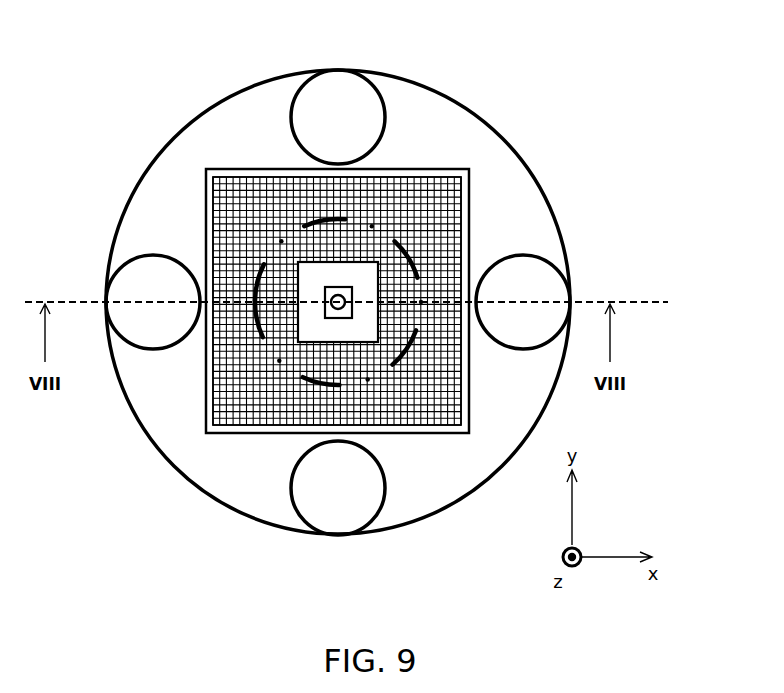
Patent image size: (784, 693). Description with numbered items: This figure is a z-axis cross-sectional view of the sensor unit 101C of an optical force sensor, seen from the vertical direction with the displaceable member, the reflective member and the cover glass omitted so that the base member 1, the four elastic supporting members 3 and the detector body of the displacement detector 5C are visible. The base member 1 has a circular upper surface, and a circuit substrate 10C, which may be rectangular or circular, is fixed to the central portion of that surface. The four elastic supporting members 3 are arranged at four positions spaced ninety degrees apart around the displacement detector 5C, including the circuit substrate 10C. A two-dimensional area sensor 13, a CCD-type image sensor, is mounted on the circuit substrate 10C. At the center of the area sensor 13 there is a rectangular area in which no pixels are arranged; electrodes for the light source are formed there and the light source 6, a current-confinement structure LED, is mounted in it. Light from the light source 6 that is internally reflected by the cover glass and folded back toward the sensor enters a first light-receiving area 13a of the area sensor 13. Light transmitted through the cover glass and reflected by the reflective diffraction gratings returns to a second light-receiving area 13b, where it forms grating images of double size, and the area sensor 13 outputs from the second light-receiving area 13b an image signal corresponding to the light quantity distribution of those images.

The base member 1 is at (148, 167).
The elastic supporting members 3 is at (377, 92).
The displacement detector 5C is at (186, 435).
The light source 6 is at (331, 309).
The circuit substrate 10C is at (253, 433).
The two-dimensional area sensor 13 is at (422, 200).
The first light-receiving area 13a is at (445, 420).
The second light-receiving area 13b is at (230, 210).
The sensor unit 101C is at (563, 83).